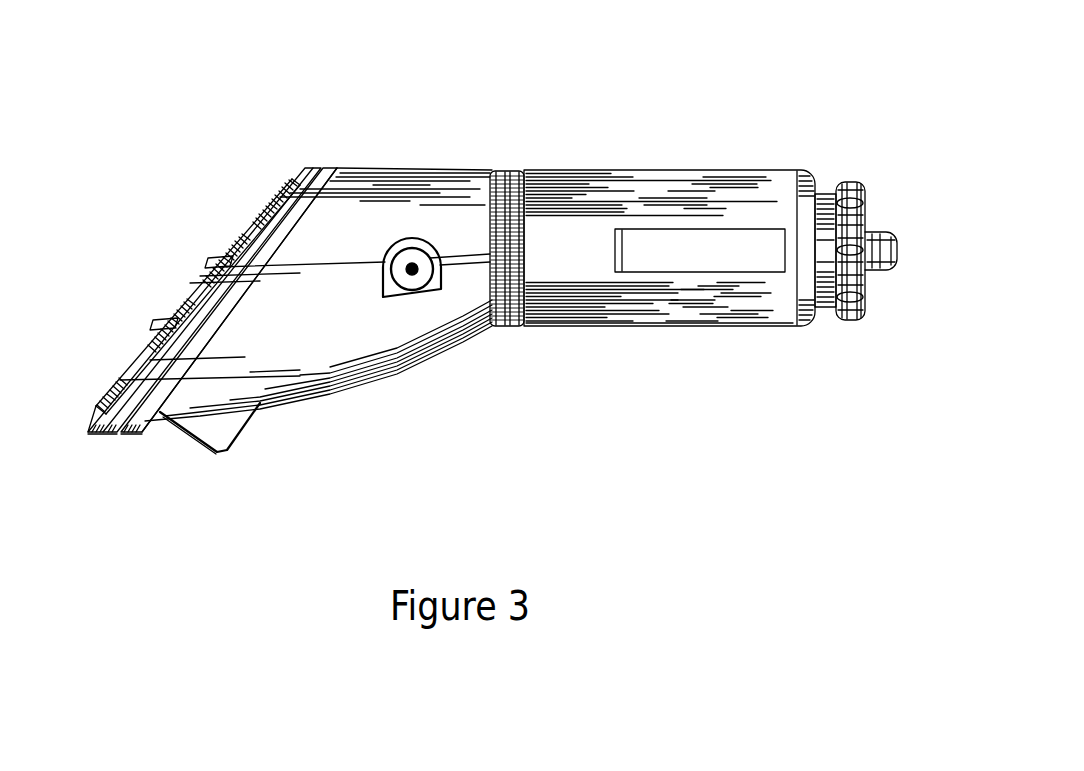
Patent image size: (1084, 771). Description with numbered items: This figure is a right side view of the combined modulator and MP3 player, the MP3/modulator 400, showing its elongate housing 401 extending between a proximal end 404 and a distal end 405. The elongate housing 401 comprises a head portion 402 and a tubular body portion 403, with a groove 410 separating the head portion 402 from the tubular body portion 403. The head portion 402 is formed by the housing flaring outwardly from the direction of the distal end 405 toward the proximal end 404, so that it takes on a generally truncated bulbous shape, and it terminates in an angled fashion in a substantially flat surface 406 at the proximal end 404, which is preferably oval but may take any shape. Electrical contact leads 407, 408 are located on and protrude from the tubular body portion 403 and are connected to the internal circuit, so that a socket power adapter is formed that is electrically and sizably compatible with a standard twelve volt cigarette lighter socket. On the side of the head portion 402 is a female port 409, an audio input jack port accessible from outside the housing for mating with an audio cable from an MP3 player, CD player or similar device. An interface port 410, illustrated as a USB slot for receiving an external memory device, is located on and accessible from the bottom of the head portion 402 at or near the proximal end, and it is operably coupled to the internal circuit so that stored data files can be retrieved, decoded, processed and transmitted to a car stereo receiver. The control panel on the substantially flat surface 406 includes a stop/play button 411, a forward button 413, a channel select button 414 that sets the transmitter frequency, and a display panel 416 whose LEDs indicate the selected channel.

The MP3/modulator 400 is at (752, 86).
The elongate housing 401 is at (579, 170).
The head portion 402 is at (407, 167).
The tubular body portion 403 is at (591, 328).
The proximal end 404 is at (305, 168).
The distal end 405 is at (813, 178).
The substantially flat surface 406 is at (146, 357).
The electrical contact lead 407 is at (677, 258).
The electrical contact lead 408 is at (884, 233).
The female port 409 is at (412, 272).
The interface port 410 is at (512, 170).
The stop/play button 411 is at (97, 407).
The forward button 413 is at (158, 338).
The channel select button 414 is at (188, 287).
The display panel 416 is at (252, 227).